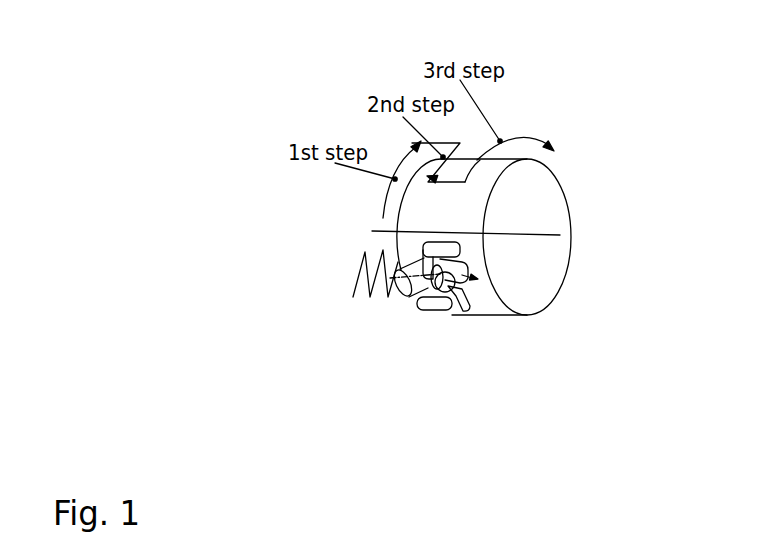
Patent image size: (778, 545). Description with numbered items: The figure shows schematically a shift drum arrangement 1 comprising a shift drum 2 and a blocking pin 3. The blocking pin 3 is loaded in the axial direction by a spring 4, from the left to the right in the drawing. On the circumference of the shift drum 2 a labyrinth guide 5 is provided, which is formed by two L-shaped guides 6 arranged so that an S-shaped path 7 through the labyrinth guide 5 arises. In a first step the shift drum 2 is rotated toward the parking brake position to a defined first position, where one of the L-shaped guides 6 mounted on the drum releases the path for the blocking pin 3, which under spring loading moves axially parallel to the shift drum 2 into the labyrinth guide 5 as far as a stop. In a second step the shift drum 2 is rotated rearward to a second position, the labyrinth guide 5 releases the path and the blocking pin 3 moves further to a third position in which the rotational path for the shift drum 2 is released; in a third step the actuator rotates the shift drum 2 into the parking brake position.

The shift drum arrangement 1 is at (588, 77).
The shift drum 2 is at (545, 192).
The blocking pin 3 is at (401, 284).
The spring 4 is at (358, 277).
The labyrinth guide 5 is at (400, 334).
The L-shaped guides 6 is at (445, 305).
The S-shaped path 7 is at (460, 267).